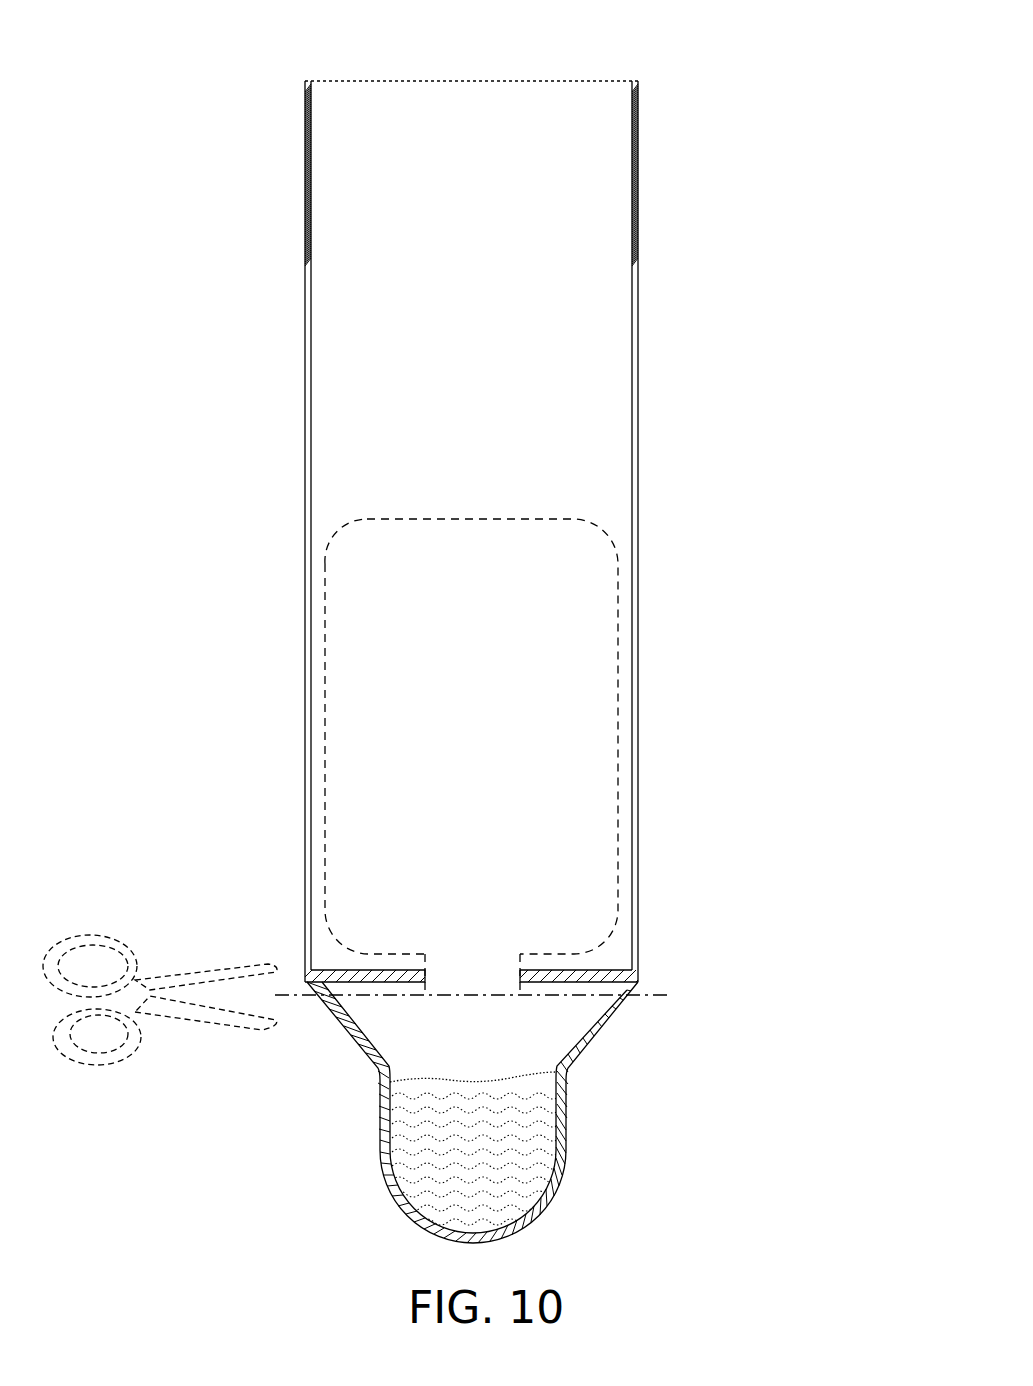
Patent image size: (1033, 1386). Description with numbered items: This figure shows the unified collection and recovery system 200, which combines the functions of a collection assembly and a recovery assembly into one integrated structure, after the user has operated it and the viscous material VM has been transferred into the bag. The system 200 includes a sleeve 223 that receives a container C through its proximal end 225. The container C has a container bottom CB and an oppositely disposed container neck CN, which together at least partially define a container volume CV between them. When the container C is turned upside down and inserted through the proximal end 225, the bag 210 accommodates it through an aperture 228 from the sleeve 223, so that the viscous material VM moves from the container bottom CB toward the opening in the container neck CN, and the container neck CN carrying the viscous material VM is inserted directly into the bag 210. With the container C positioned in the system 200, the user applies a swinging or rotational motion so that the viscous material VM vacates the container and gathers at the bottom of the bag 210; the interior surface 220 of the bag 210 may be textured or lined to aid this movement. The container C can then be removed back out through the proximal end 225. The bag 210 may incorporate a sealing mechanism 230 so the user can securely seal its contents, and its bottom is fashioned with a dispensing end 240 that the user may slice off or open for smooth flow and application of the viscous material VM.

The system 200 is at (187, 244).
The proximal end 225 is at (592, 81).
The sleeve 223 is at (492, 318).
The aperture 228 is at (420, 968).
The sealing mechanism 230 is at (600, 968).
The container C is at (618, 787).
The container bottom CB is at (524, 519).
The container volume CV is at (590, 640).
The container neck CN is at (500, 950).
The bag 210 is at (631, 1082).
The interior surface 220 is at (400, 1103).
The dispensing end 240 is at (477, 1245).
The viscous material VM is at (522, 1152).